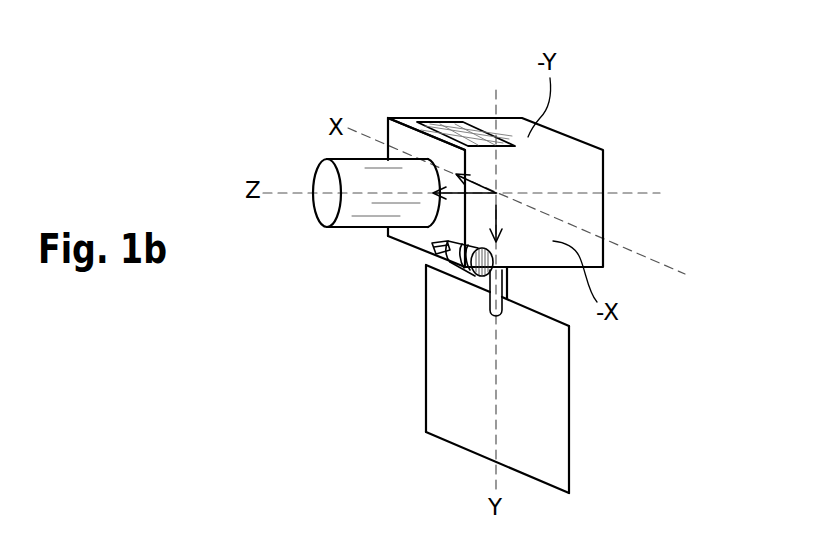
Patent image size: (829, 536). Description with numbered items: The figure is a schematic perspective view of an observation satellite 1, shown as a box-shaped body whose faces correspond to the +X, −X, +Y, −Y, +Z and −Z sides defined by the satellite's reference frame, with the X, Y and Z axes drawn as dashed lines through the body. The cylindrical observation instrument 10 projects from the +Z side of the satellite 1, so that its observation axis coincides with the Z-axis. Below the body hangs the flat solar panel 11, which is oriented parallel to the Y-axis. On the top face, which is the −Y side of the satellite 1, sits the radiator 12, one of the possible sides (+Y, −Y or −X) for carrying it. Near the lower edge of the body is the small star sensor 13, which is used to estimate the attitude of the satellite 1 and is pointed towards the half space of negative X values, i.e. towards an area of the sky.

The satellite 1 is at (606, 166).
The observation instrument 10 is at (362, 212).
The solar panel 11 is at (559, 449).
The radiator 12 is at (443, 124).
The star sensor 13 is at (460, 262).